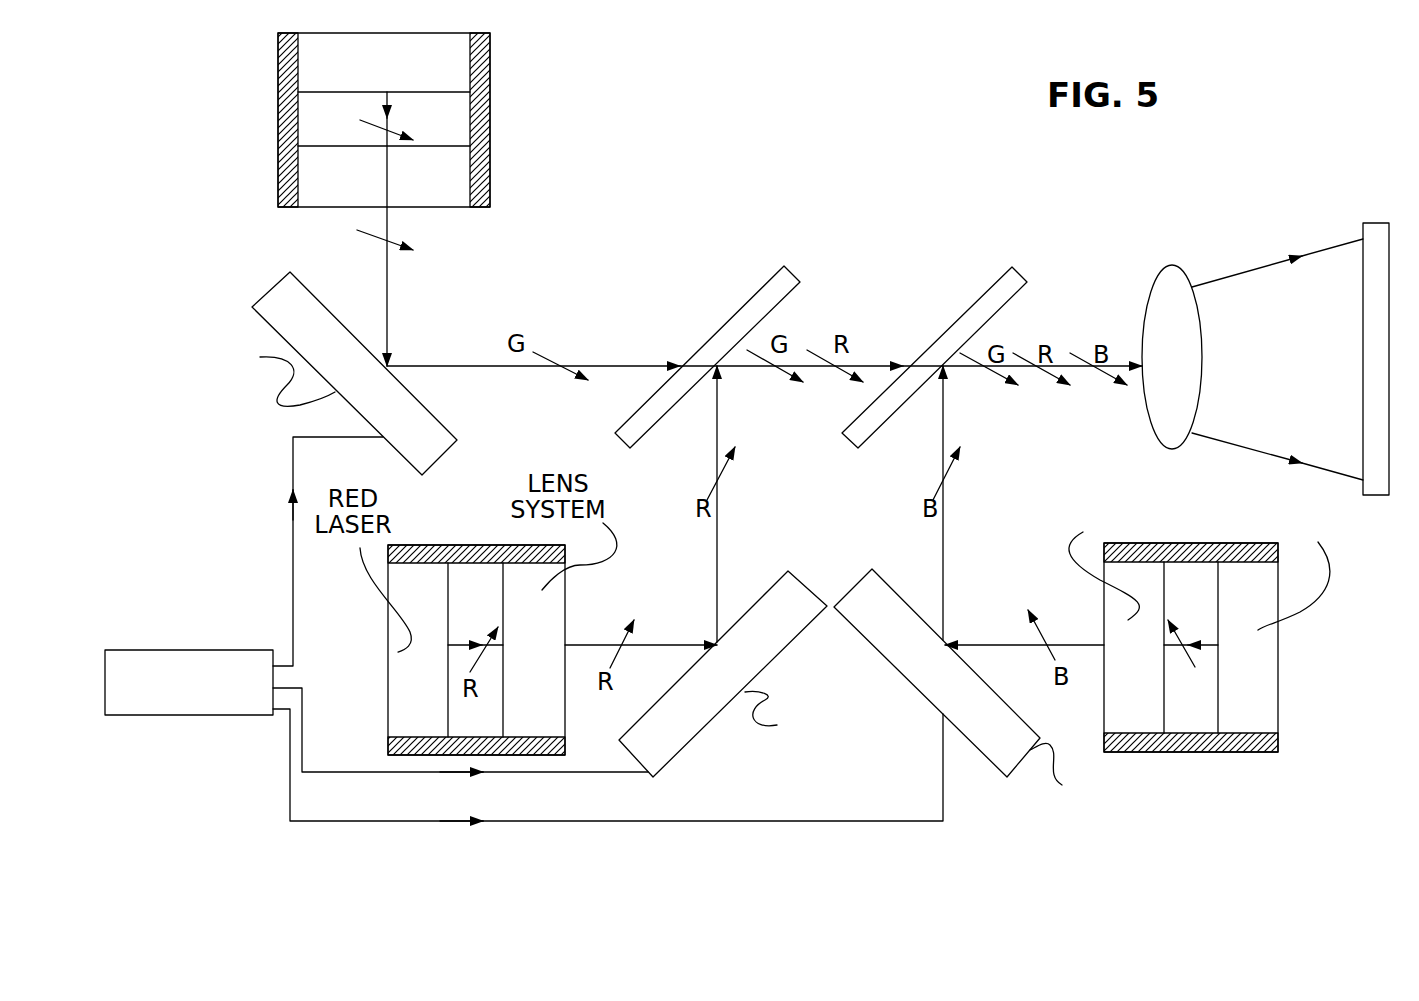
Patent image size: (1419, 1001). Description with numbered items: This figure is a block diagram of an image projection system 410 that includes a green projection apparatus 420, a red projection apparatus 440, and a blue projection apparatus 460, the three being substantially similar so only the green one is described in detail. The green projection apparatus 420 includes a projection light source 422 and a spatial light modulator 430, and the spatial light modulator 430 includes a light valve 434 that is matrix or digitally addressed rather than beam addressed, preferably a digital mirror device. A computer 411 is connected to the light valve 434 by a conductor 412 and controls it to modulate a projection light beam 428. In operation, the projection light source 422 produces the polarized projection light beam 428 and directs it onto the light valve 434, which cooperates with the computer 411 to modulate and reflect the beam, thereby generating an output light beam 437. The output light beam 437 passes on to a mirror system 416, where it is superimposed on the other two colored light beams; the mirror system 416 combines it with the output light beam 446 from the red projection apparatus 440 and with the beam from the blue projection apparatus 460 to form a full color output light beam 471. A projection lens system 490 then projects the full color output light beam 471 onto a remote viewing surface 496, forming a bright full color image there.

The image projection system 410 is at (1220, 152).
The computer 411 is at (184, 716).
The conductor 412 is at (292, 575).
The mirror system 416 is at (933, 242).
The green projection apparatus 420 is at (610, 189).
The projection light source 422 is at (247, 97).
The projection light beam 428 is at (390, 222).
The spatial light modulator 430 is at (446, 311).
The light valve 434 is at (252, 300).
The output light beam 437 is at (637, 366).
The red projection apparatus 440 is at (259, 821).
The output light beam 446 is at (717, 555).
The blue projection apparatus 460 is at (1227, 808).
The full color output light beam 471 is at (1063, 366).
The projection lens system 490 is at (1180, 256).
The remote viewing surface 496 is at (1373, 223).